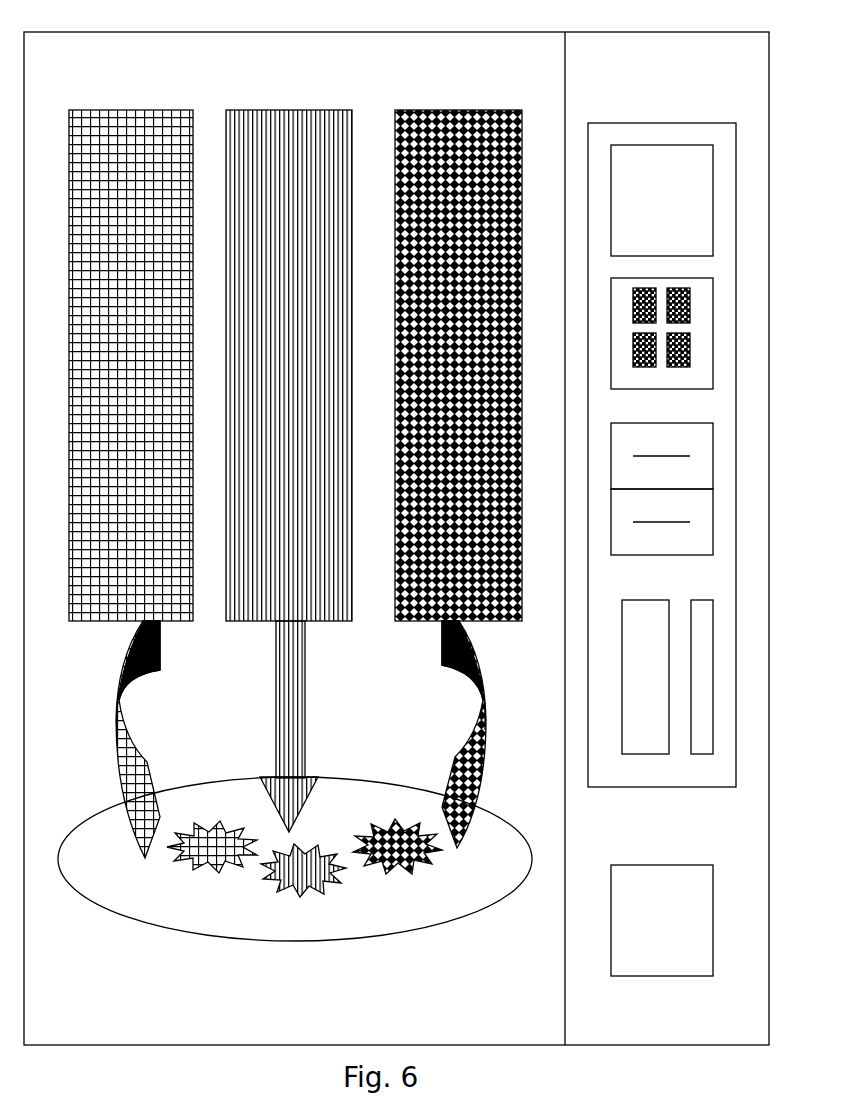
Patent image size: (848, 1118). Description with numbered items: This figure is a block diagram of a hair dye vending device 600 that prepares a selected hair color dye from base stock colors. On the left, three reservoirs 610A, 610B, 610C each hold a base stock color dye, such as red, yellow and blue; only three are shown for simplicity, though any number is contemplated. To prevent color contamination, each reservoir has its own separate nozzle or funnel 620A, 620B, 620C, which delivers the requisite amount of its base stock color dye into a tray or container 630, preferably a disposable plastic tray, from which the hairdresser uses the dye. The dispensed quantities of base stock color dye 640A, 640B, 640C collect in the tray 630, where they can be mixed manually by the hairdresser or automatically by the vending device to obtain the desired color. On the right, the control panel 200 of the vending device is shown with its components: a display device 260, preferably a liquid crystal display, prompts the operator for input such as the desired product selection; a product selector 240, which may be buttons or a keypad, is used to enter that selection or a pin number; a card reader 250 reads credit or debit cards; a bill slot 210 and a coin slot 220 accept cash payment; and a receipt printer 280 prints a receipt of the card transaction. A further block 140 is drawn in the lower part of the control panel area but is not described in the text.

The vending device 600 is at (200, 32).
The reservoir 610A is at (181, 109).
The reservoir 610B is at (341, 109).
The reservoir 610C is at (511, 109).
The nozzle or funnel 620A is at (113, 688).
The nozzle or funnel 620B is at (273, 678).
The nozzle or funnel 620C is at (440, 668).
The tray or container 630 is at (499, 900).
The base stock color dye 640A is at (206, 873).
The base stock color dye 640B is at (305, 895).
The base stock color dye 640C is at (398, 872).
The control panel 200 is at (712, 121).
The display device 260 is at (715, 189).
The product selector 240 is at (715, 356).
The card reader 250 is at (715, 467).
The bill slot 210 is at (715, 543).
The coin slot 220 is at (715, 688).
The receipt printer 280 is at (645, 756).
The network 140 is at (700, 978).